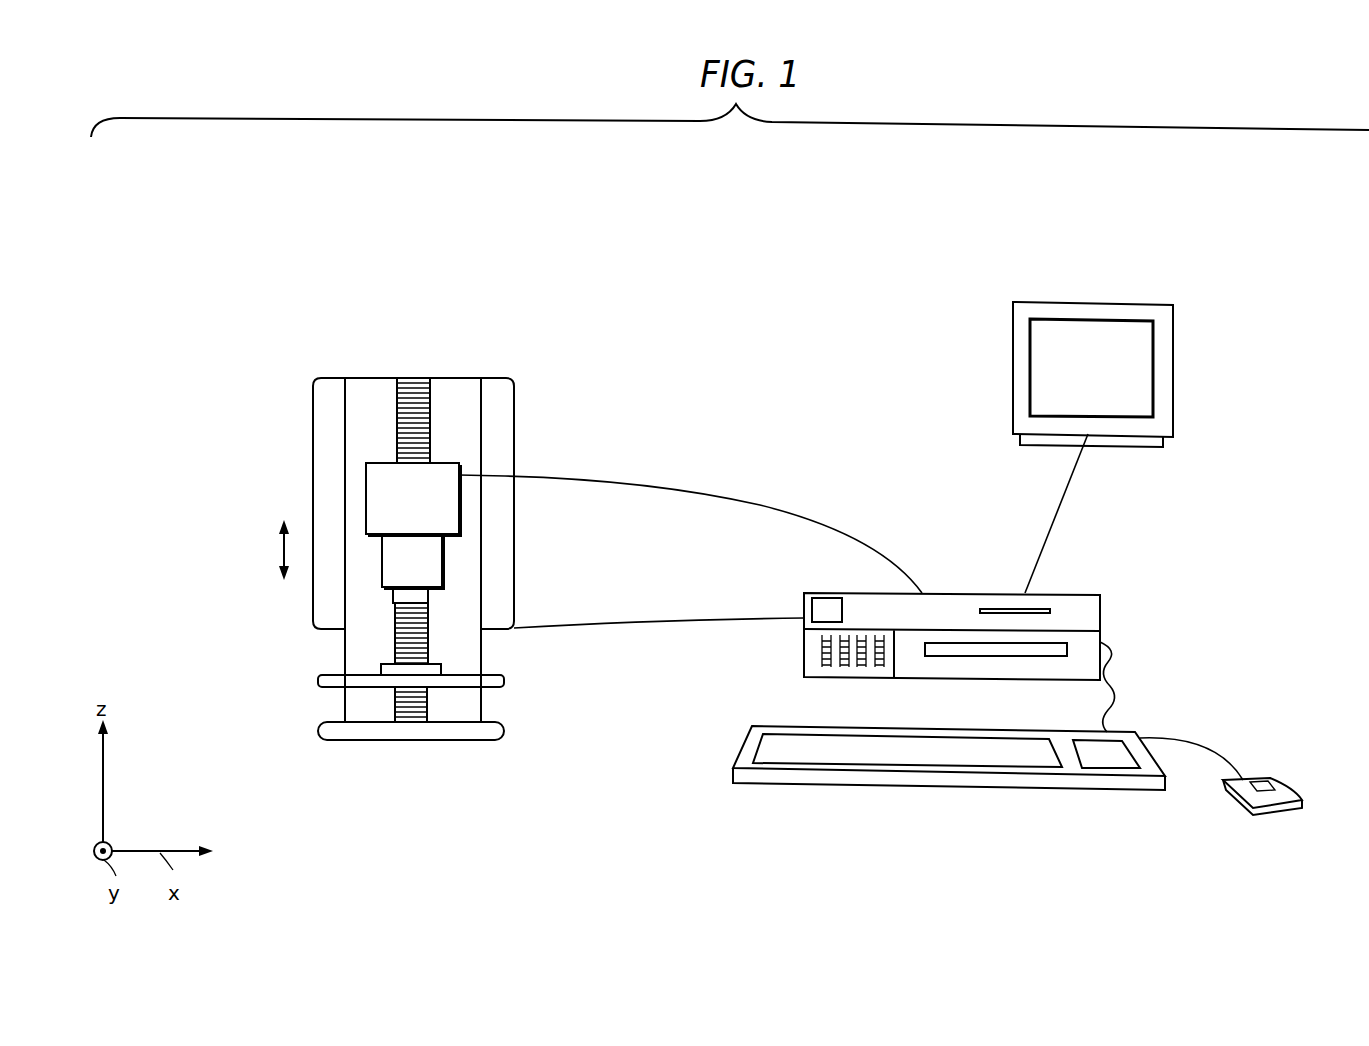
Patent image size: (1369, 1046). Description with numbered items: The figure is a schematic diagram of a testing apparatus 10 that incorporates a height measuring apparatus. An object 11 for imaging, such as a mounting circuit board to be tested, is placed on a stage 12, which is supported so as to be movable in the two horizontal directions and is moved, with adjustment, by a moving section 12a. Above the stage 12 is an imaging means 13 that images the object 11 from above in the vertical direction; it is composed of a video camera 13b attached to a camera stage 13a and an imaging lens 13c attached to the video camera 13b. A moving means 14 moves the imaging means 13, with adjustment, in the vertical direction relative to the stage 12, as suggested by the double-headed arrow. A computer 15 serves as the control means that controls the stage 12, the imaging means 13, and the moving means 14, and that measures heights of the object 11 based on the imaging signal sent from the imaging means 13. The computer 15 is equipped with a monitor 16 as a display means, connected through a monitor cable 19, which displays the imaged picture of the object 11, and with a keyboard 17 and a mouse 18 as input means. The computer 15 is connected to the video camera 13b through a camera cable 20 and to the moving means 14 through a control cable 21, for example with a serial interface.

The testing apparatus 10 is at (508, 256).
The object 11 is at (441, 672).
The stage 12 is at (504, 682).
The moving section 12a is at (430, 700).
The imaging means 13 is at (355, 365).
The camera stage 13a is at (455, 401).
The video camera 13b is at (366, 481).
The imaging lens 13c is at (442, 542).
The moving means 14 is at (312, 615).
The computer 15 is at (1180, 590).
The monitor 16 is at (1097, 303).
The keyboard 17 is at (835, 785).
The mouse 18 is at (1265, 779).
The monitor cable 19 is at (1067, 488).
The camera cable 20 is at (660, 486).
The control cable 21 is at (555, 627).